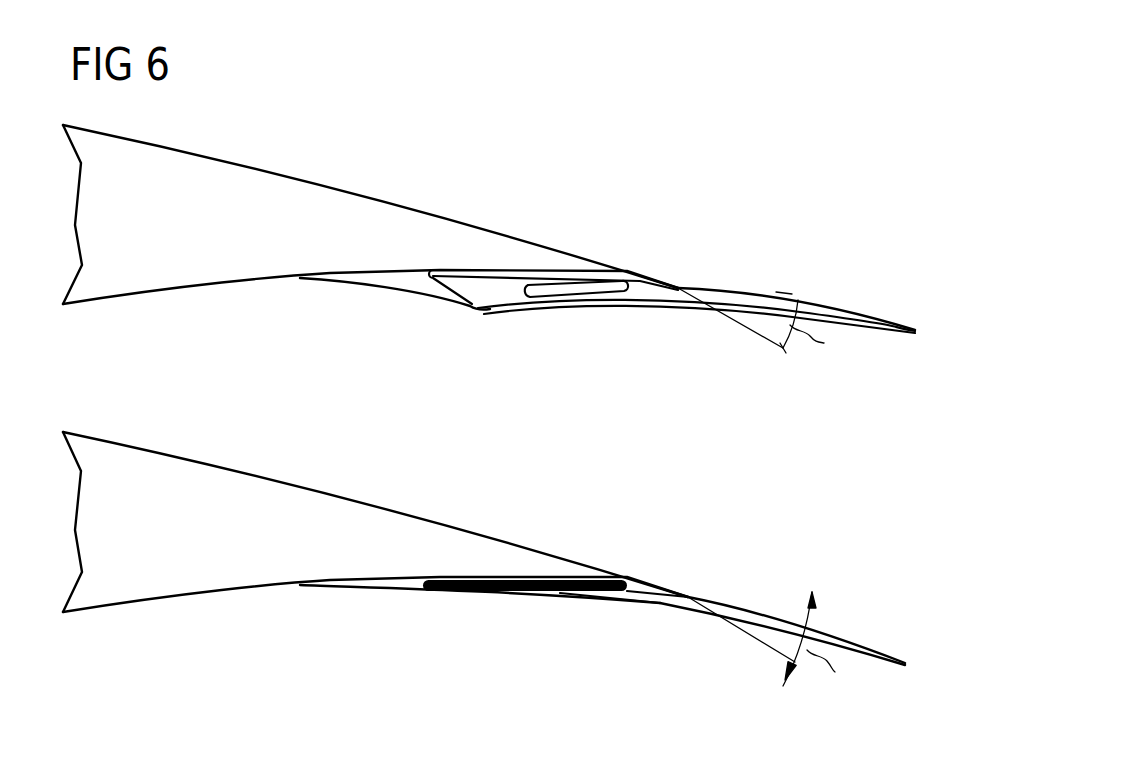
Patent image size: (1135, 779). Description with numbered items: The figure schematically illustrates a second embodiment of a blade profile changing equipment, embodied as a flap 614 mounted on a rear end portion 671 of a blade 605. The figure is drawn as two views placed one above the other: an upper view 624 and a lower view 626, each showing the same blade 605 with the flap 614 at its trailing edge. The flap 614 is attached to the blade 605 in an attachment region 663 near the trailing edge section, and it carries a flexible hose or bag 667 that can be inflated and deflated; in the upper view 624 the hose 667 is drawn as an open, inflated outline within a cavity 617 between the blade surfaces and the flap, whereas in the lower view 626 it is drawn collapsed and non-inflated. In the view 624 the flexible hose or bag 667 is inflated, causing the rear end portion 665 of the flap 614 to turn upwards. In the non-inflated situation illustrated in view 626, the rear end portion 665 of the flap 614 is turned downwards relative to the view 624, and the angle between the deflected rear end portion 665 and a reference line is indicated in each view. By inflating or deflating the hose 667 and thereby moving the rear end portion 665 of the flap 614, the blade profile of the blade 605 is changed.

The blade 605 is at (459, 195).
The attachment region 663 is at (368, 290).
The rear end portion of the blade 671 is at (549, 246).
The flexible hose or bag 667 is at (623, 293).
The cavity 617 is at (525, 339).
The rear end portion of the flap 665 is at (882, 321).
The view 624 is at (814, 208).
The view 626 is at (758, 546).
The flap 614 is at (617, 630).